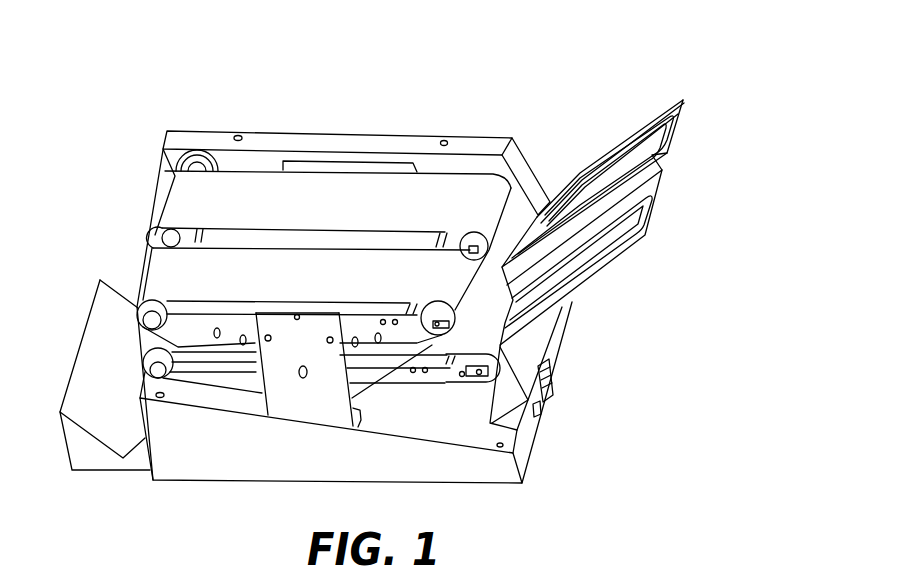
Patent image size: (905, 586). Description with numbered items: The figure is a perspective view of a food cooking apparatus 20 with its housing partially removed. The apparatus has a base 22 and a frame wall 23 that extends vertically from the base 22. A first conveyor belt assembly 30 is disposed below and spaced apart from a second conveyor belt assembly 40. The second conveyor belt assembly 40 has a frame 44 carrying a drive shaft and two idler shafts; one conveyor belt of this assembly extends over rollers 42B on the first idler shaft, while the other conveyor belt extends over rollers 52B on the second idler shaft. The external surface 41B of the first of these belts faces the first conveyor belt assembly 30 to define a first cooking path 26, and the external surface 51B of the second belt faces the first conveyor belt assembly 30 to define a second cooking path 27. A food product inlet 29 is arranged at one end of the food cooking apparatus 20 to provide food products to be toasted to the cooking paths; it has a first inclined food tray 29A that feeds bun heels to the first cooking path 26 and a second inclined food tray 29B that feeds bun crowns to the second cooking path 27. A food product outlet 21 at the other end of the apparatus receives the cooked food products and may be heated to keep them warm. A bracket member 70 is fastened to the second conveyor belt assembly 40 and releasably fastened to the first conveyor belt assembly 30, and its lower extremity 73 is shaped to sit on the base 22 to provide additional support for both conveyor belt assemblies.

The food cooking apparatus 20 is at (424, 90).
The food product outlet 21 is at (93, 355).
The base 22 is at (500, 467).
The frame wall 23 is at (487, 145).
The first cooking path 26 is at (432, 350).
The second cooking path 27 is at (501, 237).
The food product inlet 29 is at (655, 222).
The first inclined food tray 29A is at (630, 223).
The second inclined food tray 29B is at (652, 143).
The first conveyor belt assembly 30 is at (182, 383).
The second conveyor belt assembly 40 is at (127, 233).
The external surface 41B is at (167, 272).
The rollers 42B is at (443, 313).
The frame 44 is at (226, 233).
The external surface 51B is at (218, 178).
The rollers 52B is at (474, 240).
The bracket member 70 is at (292, 408).
The lower extremity 73 is at (357, 413).